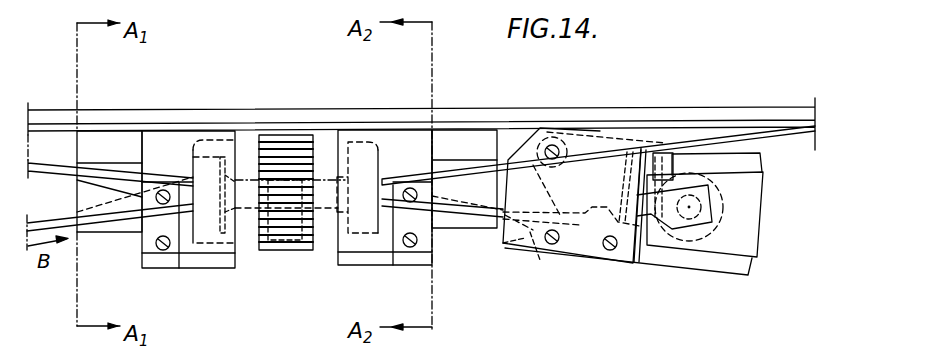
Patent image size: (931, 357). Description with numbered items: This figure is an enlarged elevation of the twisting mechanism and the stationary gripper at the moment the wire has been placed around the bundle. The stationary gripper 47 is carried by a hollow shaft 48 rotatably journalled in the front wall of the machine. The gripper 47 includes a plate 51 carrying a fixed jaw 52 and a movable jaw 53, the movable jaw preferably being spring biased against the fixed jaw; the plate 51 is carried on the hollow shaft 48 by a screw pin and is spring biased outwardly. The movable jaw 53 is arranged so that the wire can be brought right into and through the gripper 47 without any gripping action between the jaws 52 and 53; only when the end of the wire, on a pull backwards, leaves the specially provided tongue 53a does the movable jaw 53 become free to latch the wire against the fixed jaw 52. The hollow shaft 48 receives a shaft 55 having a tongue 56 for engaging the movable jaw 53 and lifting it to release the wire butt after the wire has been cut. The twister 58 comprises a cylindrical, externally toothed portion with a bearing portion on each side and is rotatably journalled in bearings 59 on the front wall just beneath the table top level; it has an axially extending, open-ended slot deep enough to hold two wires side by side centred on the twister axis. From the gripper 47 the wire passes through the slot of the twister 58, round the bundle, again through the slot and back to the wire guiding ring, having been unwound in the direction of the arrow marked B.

The stationary gripper 47 is at (587, 263).
The hollow shaft 48 is at (707, 232).
The plate 51 is at (517, 243).
The fixed jaw 52 is at (533, 232).
The movable jaw 53 is at (560, 213).
The tongue 53a is at (628, 150).
The shaft 55 is at (685, 217).
The tongue 56 is at (636, 232).
The twister 58 is at (288, 252).
The bearings 59 is at (170, 143).